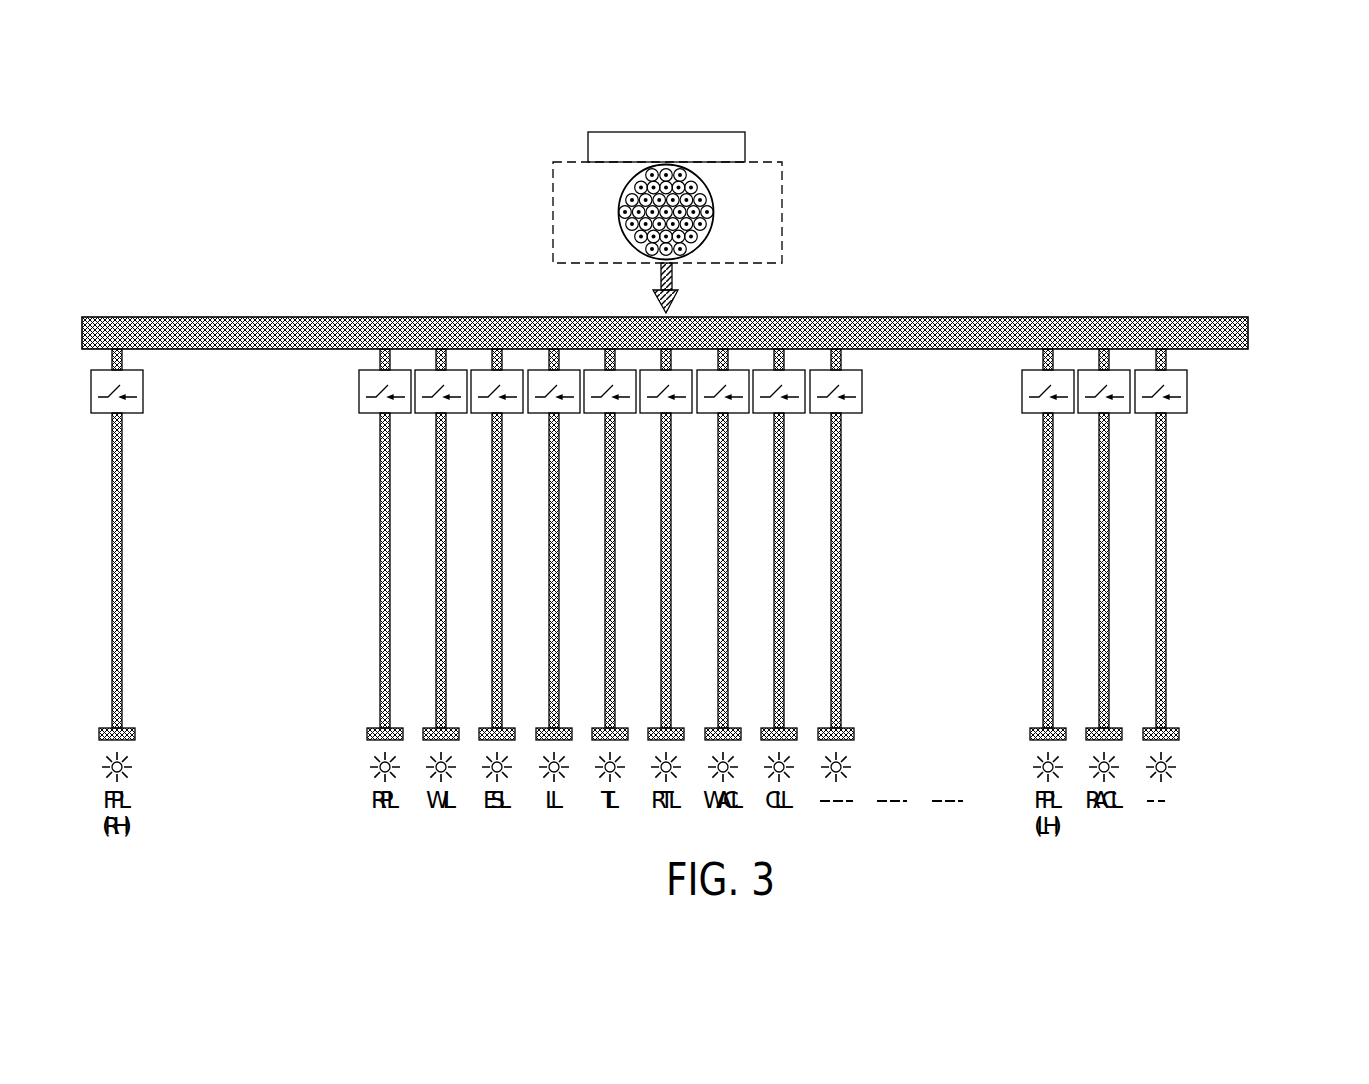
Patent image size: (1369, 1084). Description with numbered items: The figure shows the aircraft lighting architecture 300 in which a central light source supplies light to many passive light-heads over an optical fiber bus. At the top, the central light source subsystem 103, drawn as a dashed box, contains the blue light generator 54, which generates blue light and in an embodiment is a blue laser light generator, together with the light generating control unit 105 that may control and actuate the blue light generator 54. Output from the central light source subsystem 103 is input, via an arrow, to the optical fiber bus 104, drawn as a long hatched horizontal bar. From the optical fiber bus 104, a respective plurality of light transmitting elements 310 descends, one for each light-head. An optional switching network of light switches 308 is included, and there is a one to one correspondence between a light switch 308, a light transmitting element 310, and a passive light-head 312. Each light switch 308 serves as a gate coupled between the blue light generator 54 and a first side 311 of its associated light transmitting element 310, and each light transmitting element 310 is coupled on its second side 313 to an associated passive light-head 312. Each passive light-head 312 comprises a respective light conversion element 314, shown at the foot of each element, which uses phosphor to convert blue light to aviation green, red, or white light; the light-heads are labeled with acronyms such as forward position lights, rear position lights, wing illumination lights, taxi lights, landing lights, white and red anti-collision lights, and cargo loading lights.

The lighting control system 300 is at (126, 192).
The light generating control unit 105 is at (587, 158).
The blue light generator 54 is at (618, 211).
The central light source subsystem 103 is at (782, 212).
The optical fiber bus 104 is at (660, 279).
The light switch 308 is at (1257, 368).
The light transmitting element 310 is at (1258, 416).
The first side 311 is at (1286, 414).
The passive light-head 312 is at (1260, 736).
The second side 313 is at (1287, 689).
The light conversion element 314 is at (1185, 723).